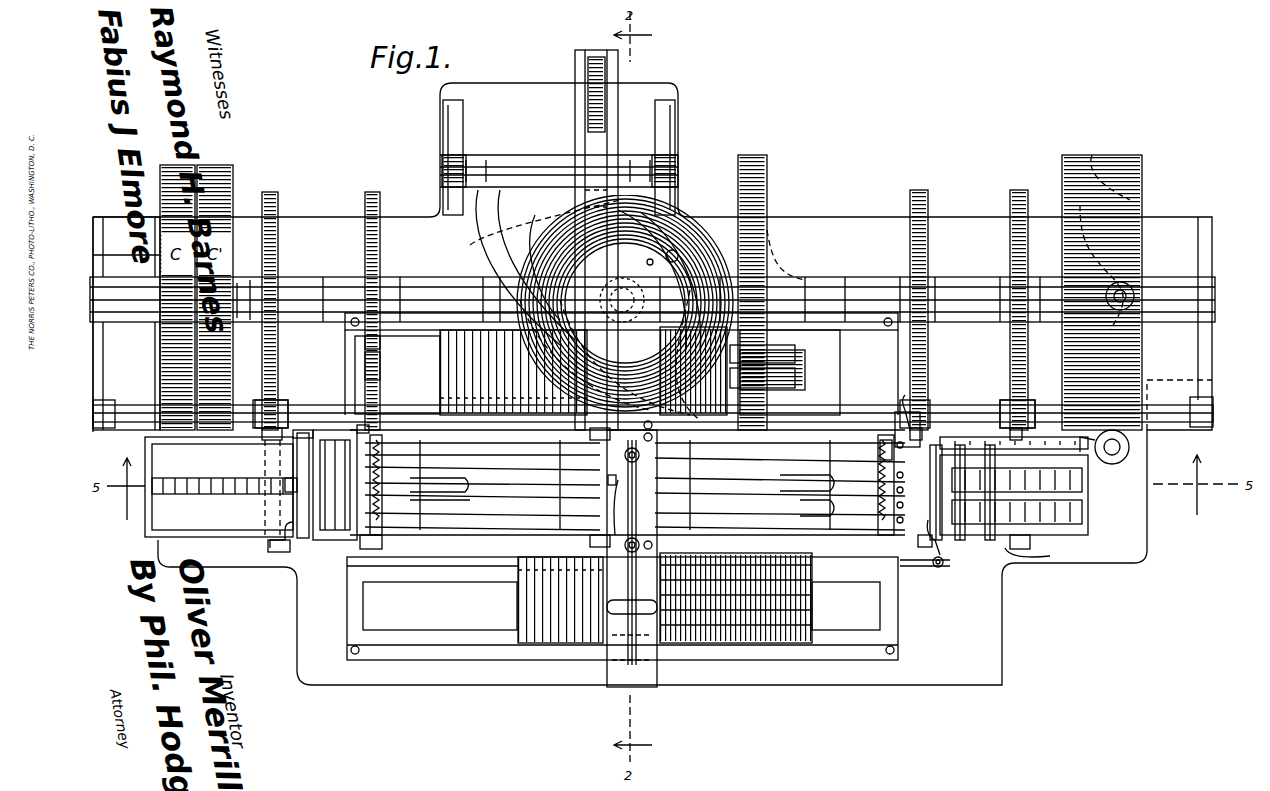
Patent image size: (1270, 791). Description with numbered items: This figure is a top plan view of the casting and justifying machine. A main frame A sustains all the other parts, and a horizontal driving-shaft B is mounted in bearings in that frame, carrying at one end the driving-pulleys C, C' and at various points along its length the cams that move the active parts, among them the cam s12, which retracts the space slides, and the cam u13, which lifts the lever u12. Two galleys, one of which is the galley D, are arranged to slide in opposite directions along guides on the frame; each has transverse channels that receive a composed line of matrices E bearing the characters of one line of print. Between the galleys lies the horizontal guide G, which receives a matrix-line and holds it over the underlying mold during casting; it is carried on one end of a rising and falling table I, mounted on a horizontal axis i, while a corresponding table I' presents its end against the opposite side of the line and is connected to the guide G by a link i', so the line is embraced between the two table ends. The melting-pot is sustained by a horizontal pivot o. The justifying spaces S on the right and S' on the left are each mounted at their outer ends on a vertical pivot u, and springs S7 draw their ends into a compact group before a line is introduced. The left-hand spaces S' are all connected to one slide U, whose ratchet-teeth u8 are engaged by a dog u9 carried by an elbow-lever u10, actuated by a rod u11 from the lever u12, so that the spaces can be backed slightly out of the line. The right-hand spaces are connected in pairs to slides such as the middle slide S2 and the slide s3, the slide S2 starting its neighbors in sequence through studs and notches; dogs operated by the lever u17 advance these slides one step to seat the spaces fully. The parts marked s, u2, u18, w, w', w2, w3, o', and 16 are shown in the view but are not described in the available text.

The main frame A is at (130, 340).
The horizontal driving-shaft B is at (108, 262).
The driving-pulley C is at (177, 297).
The driving-pulley C' is at (215, 297).
The galley D is at (445, 355).
The composed line of matrices E is at (660, 328).
The horizontal guide G is at (632, 554).
The rising and falling table I is at (780, 499).
The corresponding table I' is at (482, 499).
The spaces S is at (762, 498).
The spaces S' is at (485, 498).
The slide S2 is at (1085, 482).
The slide s3 is at (1085, 515).
The springs S7 is at (385, 520).
The pulley s is at (1104, 447).
The cam s12 is at (765, 260).
The slide U is at (238, 515).
The vertical pivot u is at (948, 535).
The bracket u2 is at (335, 428).
The ratchet-teeth u8 is at (180, 488).
The dog u9 is at (290, 492).
The elbow-lever u10 is at (303, 551).
The rod u11 is at (278, 553).
The lever u12 is at (288, 405).
The cam u13 is at (280, 254).
The lever u17 is at (930, 551).
The lever arm u18 is at (930, 560).
The shaft w is at (653, 488).
The bearing w' is at (692, 569).
The collar w2 is at (1003, 404).
The gear wheel w3 is at (380, 258).
The horizontal axis i is at (891, 488).
The link i' is at (587, 489).
The horizontal pivot o is at (686, 207).
The pin o' is at (648, 272).
The pawl 16 is at (968, 530).